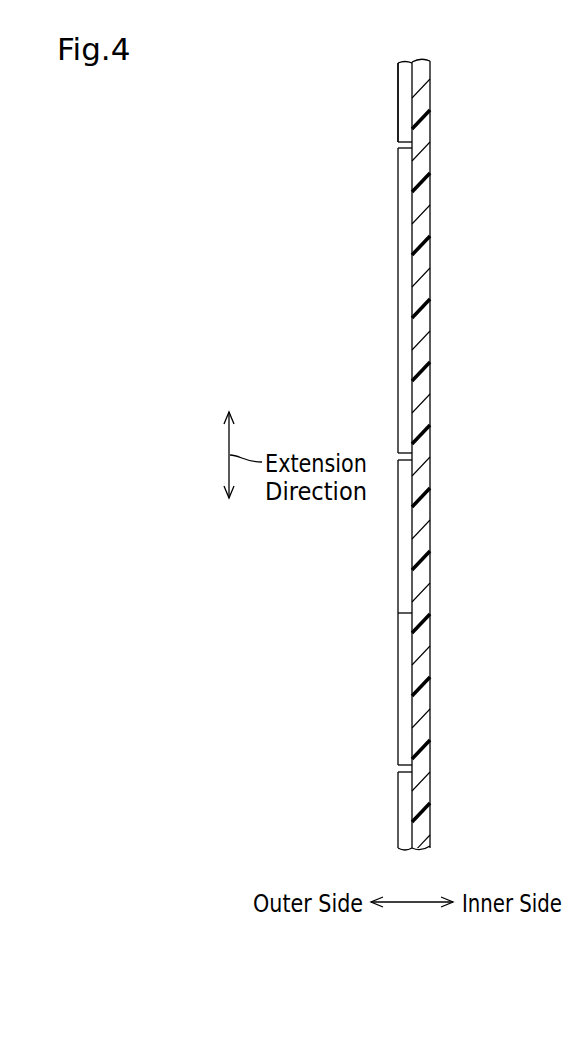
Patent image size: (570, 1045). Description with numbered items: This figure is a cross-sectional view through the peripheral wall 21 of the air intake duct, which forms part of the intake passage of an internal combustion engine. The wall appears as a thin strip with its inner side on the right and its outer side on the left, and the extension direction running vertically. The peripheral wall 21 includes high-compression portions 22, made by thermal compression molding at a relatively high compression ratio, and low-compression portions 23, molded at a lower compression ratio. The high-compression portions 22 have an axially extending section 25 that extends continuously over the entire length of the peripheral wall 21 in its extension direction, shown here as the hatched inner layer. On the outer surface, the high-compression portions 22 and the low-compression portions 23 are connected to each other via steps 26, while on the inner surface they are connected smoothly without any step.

The peripheral wall 21 is at (314, 90).
The high-compression portions 22 is at (432, 157).
The low-compression portions 23 is at (400, 104).
The axially extending section 25 is at (432, 291).
The steps 26 is at (400, 92).